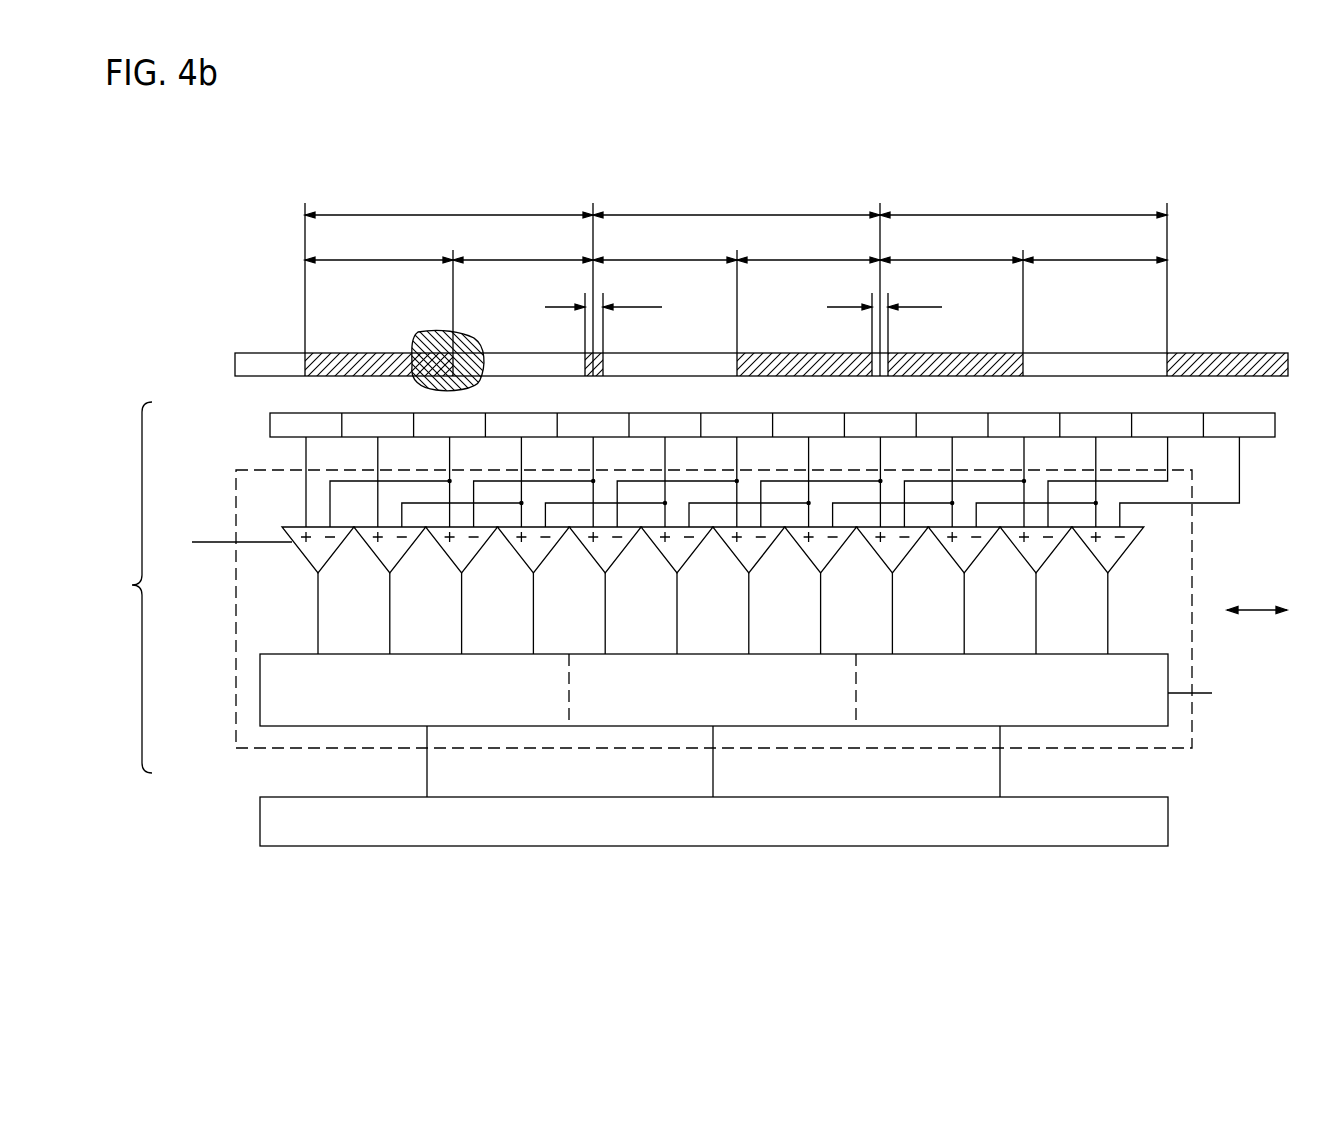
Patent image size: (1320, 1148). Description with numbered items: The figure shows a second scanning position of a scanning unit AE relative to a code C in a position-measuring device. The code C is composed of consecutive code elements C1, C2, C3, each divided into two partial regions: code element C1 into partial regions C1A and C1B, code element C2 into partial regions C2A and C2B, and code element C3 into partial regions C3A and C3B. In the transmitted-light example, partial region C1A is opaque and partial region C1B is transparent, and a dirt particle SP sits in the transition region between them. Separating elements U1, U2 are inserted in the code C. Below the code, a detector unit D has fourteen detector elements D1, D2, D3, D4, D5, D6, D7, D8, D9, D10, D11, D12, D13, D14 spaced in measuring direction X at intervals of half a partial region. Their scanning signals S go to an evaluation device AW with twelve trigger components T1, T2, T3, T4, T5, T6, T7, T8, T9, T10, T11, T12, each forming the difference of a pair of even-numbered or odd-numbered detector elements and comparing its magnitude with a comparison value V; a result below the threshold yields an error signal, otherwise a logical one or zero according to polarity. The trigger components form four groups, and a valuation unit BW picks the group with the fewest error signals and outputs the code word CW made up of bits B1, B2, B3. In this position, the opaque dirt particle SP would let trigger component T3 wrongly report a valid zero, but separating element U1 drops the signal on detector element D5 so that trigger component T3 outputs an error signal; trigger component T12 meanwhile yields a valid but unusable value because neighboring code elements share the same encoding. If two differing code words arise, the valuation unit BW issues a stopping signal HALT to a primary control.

The code C is at (268, 358).
The code element C1 is at (449, 283).
The partial region of code element C1 C1A is at (379, 306).
The partial region of code element C1 C1B is at (523, 250).
The code element C2 is at (736, 283).
The partial region of code element C2 C2A is at (665, 306).
The partial region of code element C2 C2B is at (808, 250).
The code element C3 is at (1023, 283).
The partial region of code element C3 C3A is at (951, 306).
The partial region of code element C3 C3B is at (1095, 250).
The dirt particle SP is at (485, 348).
The separating element U1 is at (603, 327).
The separating element U2 is at (884, 327).
The detector unit D is at (267, 427).
The detector element D1 is at (306, 470).
The detector element D2 is at (365, 470).
The detector element D3 is at (437, 470).
The detector element D4 is at (508, 470).
The detector element D5 is at (580, 470).
The detector element D6 is at (652, 470).
The detector element D7 is at (724, 470).
The detector element D8 is at (796, 470).
The detector element D9 is at (867, 470).
The detector element D10 is at (941, 470).
The detector element D11 is at (1013, 470).
The detector element D12 is at (1085, 470).
The detector element D13 is at (1115, 470).
The detector element D14 is at (1187, 470).
The scanning signals S is at (306, 496).
The comparison value V is at (232, 544).
The trigger component T1 is at (317, 555).
The trigger component T2 is at (390, 555).
The trigger component T3 is at (462, 555).
The trigger component T4 is at (533, 555).
The trigger component T5 is at (605, 555).
The trigger component T6 is at (677, 555).
The trigger component T7 is at (749, 555).
The trigger component T8 is at (821, 555).
The trigger component T9 is at (892, 555).
The trigger component T10 is at (961, 555).
The trigger component T11 is at (1033, 555).
The trigger component T12 is at (1104, 555).
The scanning unit AE is at (644, 587).
The evaluation device AW is at (236, 638).
The valuation unit BW is at (260, 695).
The stopping signal HALT is at (1218, 695).
The measuring direction X is at (1257, 597).
The bit B1 is at (428, 773).
The bit B2 is at (714, 773).
The bit B3 is at (1001, 773).
The code word CW is at (1162, 826).